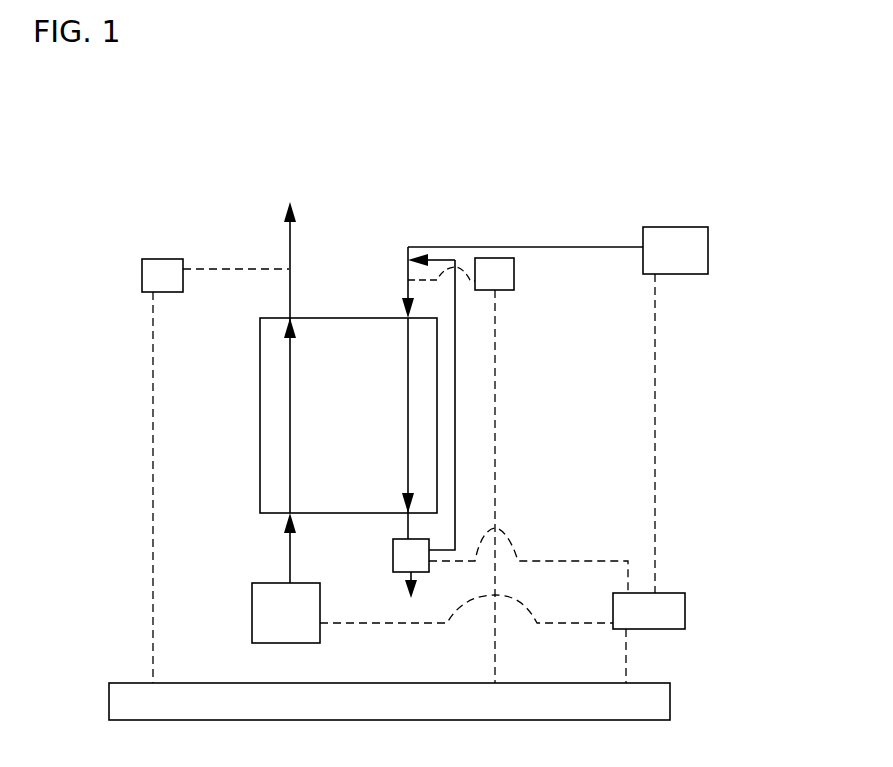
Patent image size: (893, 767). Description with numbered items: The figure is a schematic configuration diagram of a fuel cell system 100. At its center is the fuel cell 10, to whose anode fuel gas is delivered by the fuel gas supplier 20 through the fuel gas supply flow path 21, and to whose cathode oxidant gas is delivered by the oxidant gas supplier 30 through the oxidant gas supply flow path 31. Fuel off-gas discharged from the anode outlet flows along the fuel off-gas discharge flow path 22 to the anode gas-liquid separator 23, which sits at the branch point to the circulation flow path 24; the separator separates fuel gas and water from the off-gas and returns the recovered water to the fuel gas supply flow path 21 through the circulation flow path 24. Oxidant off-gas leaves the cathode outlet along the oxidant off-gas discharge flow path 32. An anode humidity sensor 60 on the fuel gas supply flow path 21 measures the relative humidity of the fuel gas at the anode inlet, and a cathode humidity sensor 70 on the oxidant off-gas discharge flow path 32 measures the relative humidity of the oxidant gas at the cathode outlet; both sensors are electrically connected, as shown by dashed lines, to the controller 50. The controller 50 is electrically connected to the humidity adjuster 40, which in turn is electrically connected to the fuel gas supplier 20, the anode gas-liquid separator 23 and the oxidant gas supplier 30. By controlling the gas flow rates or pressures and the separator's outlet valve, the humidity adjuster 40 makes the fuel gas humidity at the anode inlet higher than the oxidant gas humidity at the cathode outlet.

The fuel cell system 100 is at (768, 115).
The fuel cell 10 is at (260, 485).
The fuel gas supplier 20 is at (688, 227).
The fuel gas supply flow path 21 is at (598, 247).
The fuel off-gas discharge flow path 22 is at (406, 535).
The anode gas-liquid separator 23 is at (393, 560).
The circulation flow path 24 is at (456, 387).
The oxidant gas supplier 30 is at (252, 615).
The oxidant gas supply flow path 31 is at (286, 528).
The oxidant off-gas discharge flow path 32 is at (289, 290).
The humidity adjuster 40 is at (685, 598).
The controller 50 is at (670, 698).
The anode humidity sensor 60 is at (514, 282).
The cathode humidity sensor 70 is at (142, 262).